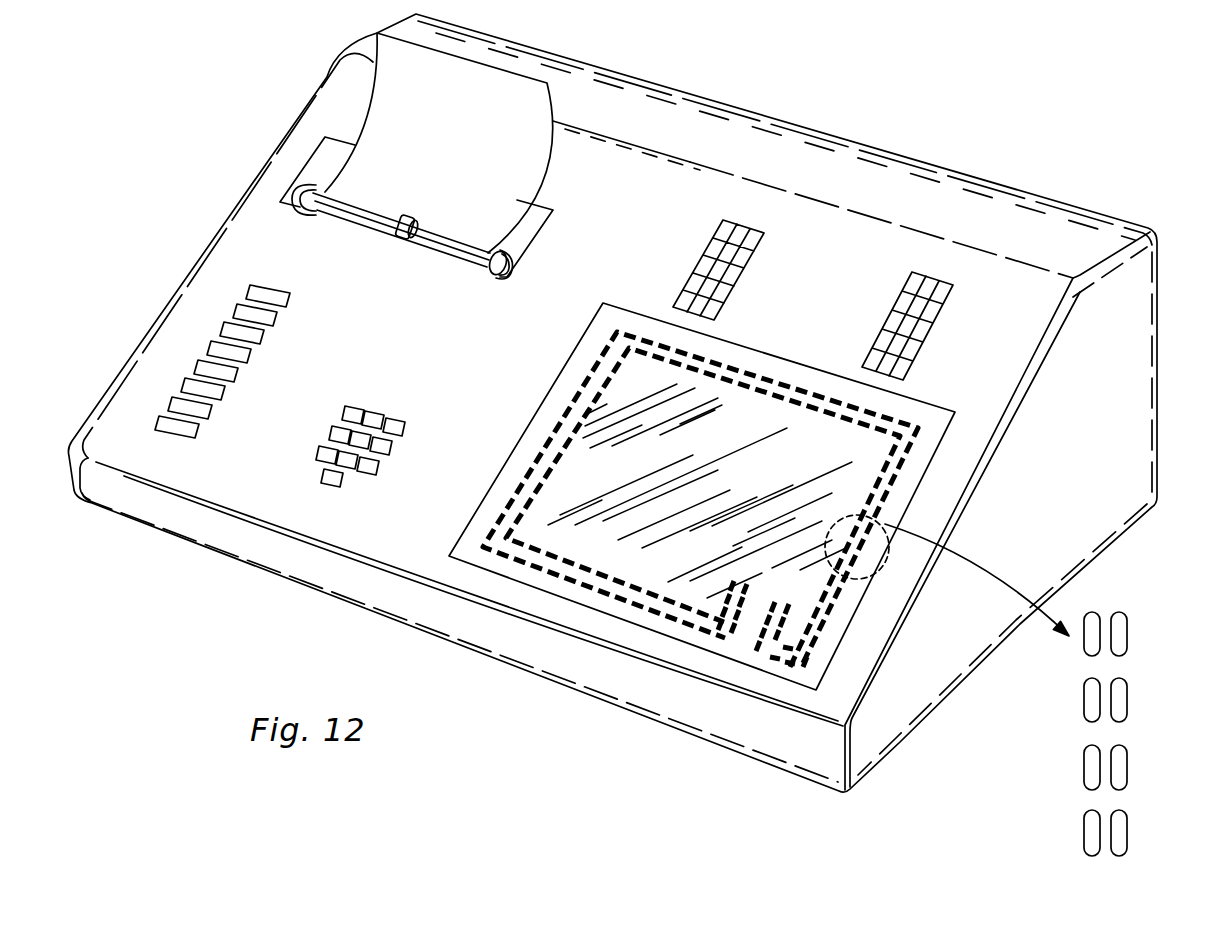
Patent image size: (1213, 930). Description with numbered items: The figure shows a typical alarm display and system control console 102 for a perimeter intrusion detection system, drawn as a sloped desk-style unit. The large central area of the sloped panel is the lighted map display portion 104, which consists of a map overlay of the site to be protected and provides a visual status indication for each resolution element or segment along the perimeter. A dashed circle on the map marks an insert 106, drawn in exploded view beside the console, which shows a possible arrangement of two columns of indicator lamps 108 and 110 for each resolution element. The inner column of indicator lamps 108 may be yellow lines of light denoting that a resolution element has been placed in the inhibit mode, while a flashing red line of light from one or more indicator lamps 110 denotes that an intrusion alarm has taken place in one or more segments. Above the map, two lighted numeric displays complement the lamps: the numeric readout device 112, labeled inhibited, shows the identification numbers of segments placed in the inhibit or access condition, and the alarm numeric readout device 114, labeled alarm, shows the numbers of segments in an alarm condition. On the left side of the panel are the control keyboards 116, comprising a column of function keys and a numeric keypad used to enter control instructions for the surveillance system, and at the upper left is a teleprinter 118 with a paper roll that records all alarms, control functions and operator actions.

The display and control console 102 is at (1147, 373).
The lighted map display portion 104 is at (580, 595).
The insert 106 is at (850, 578).
The indicator lamps 108 is at (1088, 698).
The indicator lamps 110 is at (1122, 757).
The numeric readout device 112 is at (900, 300).
The alarm numeric readout device 114 is at (713, 240).
The control keyboards 116 is at (183, 433).
The teleprinter 118 is at (380, 130).